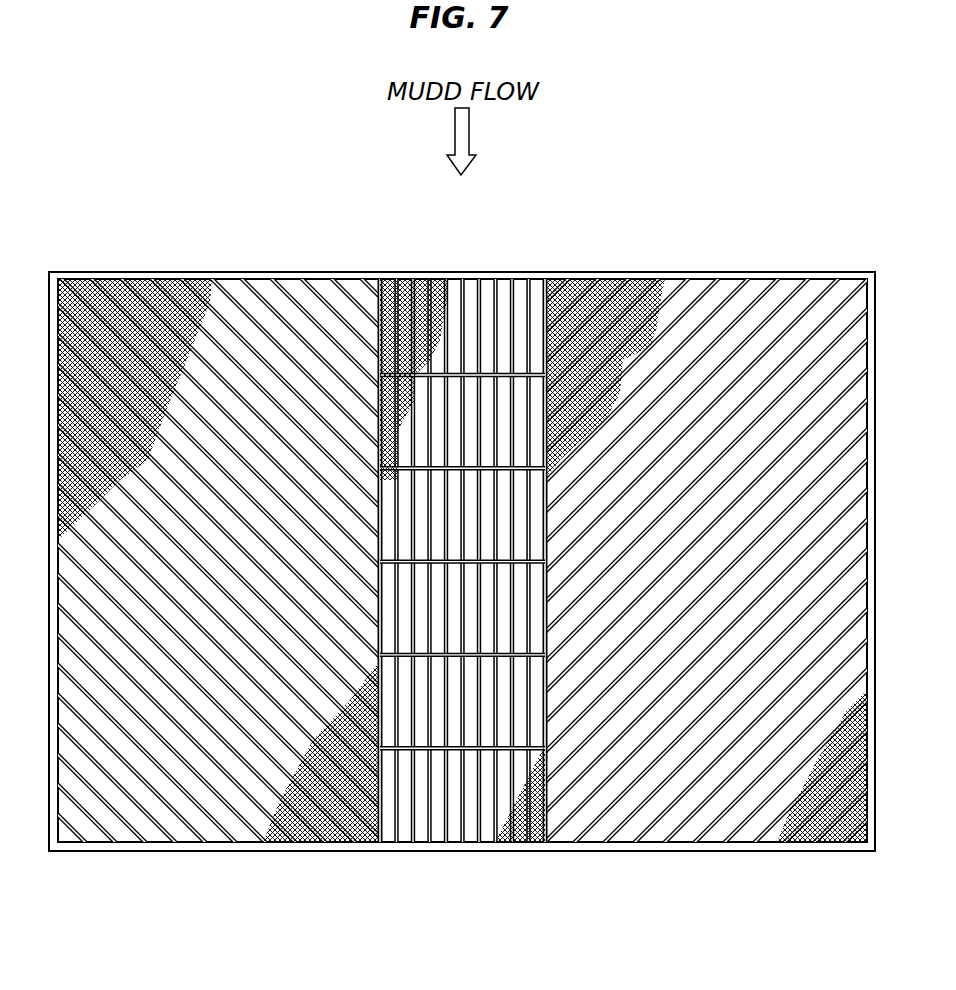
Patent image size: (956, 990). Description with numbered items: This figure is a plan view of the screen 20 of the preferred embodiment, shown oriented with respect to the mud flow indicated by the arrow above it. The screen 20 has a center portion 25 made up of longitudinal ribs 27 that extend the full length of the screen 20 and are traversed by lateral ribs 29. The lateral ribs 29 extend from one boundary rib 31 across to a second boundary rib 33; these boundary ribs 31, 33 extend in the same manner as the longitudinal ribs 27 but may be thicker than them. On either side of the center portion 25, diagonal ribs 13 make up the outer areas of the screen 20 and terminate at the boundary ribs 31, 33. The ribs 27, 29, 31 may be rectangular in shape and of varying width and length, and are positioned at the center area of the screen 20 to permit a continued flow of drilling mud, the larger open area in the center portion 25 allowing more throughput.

The diagonal ribs 13 is at (315, 292).
The screen 20 is at (662, 271).
The center portion 25 is at (433, 518).
The longitudinal ribs 27 is at (442, 287).
The lateral ribs 29 is at (423, 468).
The boundary rib 31 is at (378, 288).
The second boundary rib 33 is at (547, 283).